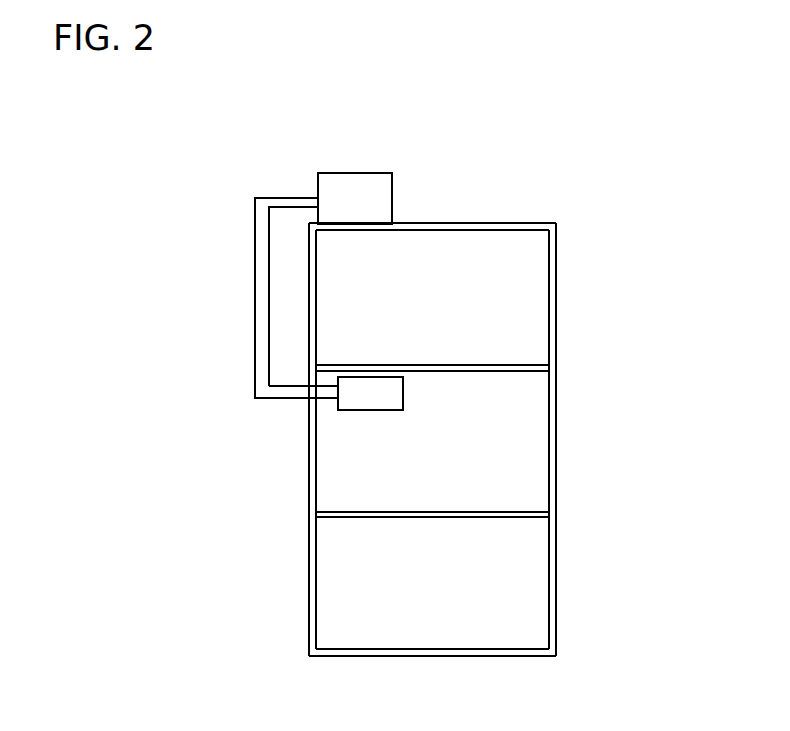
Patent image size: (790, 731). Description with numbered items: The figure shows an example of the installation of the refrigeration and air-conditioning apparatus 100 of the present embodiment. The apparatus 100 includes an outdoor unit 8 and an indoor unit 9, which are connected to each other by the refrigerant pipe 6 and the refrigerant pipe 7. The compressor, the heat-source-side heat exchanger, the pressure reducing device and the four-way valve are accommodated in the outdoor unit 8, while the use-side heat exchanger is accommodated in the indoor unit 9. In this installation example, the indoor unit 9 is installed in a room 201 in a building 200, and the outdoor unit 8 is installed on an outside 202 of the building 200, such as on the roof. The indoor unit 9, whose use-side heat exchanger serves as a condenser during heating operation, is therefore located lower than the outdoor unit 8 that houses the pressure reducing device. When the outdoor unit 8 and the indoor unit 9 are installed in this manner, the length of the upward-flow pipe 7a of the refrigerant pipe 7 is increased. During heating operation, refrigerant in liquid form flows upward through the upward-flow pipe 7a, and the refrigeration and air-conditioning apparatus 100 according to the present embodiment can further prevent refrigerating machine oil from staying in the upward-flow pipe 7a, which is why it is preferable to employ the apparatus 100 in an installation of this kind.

The refrigeration and air-conditioning apparatus 100 is at (304, 181).
The outdoor unit 8 is at (355, 173).
The refrigerant pipe 6 is at (269, 296).
The refrigerant pipe 7 is at (255, 385).
The upward-flow pipe 7a is at (255, 340).
The indoor unit 9 is at (369, 410).
The building 200 is at (560, 336).
The room 201 is at (535, 450).
The outside 202 is at (413, 208).